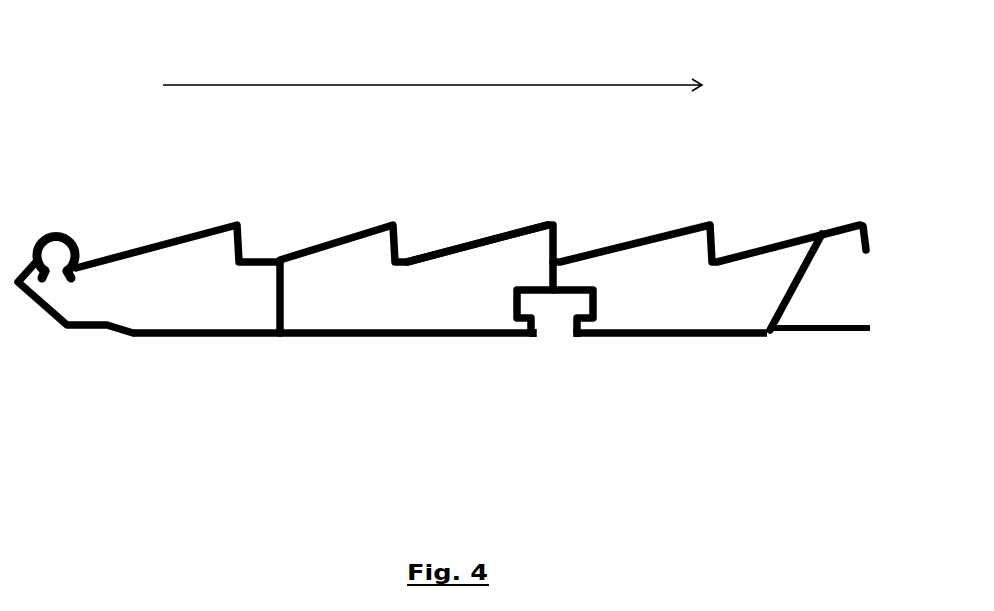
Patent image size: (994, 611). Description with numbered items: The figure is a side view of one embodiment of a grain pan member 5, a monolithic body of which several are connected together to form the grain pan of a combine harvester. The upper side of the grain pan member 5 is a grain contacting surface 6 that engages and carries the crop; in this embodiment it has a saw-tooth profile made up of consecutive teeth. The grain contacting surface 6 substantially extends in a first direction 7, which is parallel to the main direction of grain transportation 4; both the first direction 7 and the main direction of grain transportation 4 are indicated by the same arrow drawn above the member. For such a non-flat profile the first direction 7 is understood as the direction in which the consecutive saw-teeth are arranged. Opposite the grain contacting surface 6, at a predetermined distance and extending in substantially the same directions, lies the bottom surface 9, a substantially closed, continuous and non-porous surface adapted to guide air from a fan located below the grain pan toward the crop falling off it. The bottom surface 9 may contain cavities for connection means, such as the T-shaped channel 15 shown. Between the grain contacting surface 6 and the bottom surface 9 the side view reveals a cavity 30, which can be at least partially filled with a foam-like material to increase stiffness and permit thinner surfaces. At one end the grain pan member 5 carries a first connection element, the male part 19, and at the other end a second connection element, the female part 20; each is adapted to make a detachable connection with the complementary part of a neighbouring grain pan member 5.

The main direction of grain transportation 4 is at (432, 64).
The first direction 7 is at (432, 64).
The cavity 30 is at (168, 308).
The grain contacting surface 6 is at (497, 222).
The bottom surface 9 is at (233, 351).
The grain pan member 5 is at (512, 419).
The T-shaped channel 15 is at (559, 351).
The male part 19 is at (61, 224).
The female part 20 is at (876, 281).